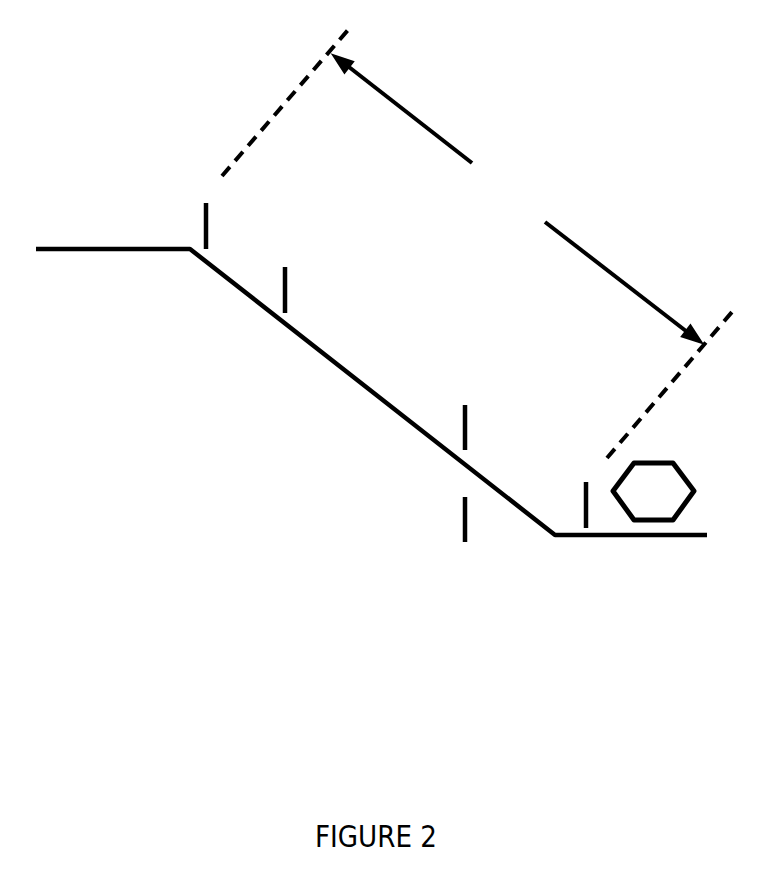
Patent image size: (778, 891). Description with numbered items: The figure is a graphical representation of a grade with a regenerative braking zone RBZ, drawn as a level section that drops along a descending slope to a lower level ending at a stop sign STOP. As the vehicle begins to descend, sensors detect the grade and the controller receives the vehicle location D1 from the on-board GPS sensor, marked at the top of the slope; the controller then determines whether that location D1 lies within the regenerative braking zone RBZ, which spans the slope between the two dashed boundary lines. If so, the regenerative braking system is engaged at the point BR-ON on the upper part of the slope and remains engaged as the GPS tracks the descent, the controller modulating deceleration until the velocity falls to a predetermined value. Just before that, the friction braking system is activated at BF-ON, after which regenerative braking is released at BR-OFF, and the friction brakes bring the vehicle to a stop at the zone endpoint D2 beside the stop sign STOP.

The location of the moving vehicle D1 is at (208, 207).
The regenerative braking zone endpoint D2 is at (594, 486).
The regenerative braking zone RBZ is at (477, 244).
The regenerative braking system engagement point BR-ON is at (305, 274).
The regenerative braking system release point BR-OFF is at (490, 411).
The friction braking system engagement point BF-ON is at (487, 540).
The stop sign STOP is at (653, 491).